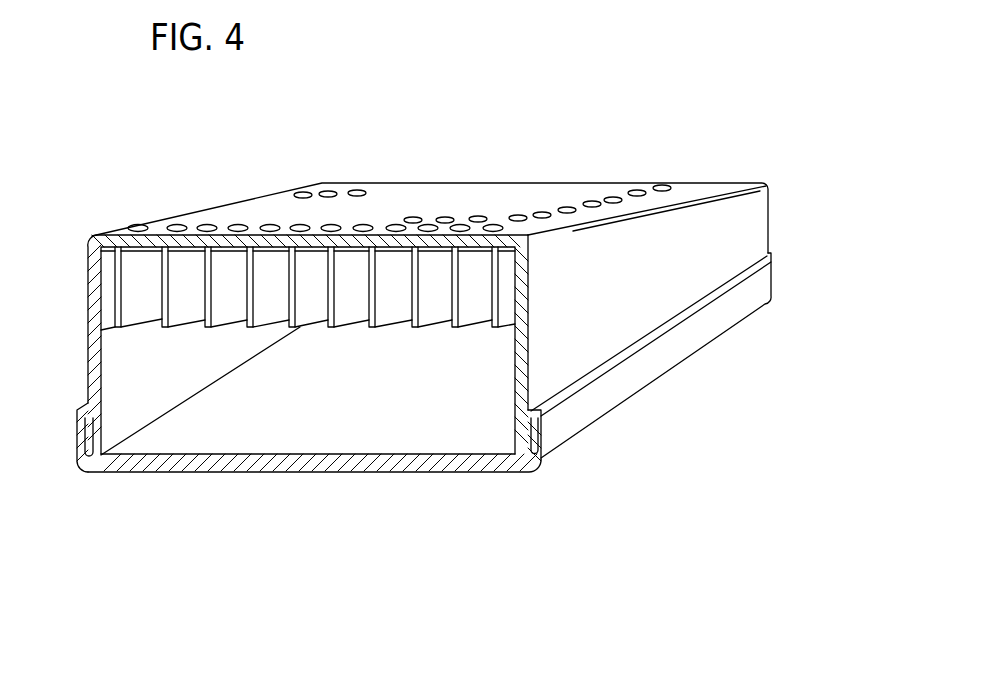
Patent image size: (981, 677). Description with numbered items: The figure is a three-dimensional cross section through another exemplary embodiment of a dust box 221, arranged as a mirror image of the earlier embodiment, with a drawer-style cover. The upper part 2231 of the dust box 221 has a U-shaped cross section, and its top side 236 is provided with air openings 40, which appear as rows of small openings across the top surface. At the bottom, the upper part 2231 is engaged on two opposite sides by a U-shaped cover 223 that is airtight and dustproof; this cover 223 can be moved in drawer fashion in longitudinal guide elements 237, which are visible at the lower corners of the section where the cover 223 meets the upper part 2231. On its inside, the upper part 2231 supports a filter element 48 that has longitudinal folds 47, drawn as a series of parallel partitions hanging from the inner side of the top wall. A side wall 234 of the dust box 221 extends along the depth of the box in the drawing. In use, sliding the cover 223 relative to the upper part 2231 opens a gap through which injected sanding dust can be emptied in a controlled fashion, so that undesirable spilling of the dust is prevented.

The dust box 221 is at (170, 188).
The upper part 2231 is at (385, 236).
The top side 236 is at (472, 174).
The air openings 40 is at (663, 186).
The side wall 234 is at (707, 250).
The longitudinal folds 47 is at (137, 282).
The filter element 48 is at (153, 329).
The longitudinal guide elements 237 is at (90, 433).
The cover 223 is at (327, 462).